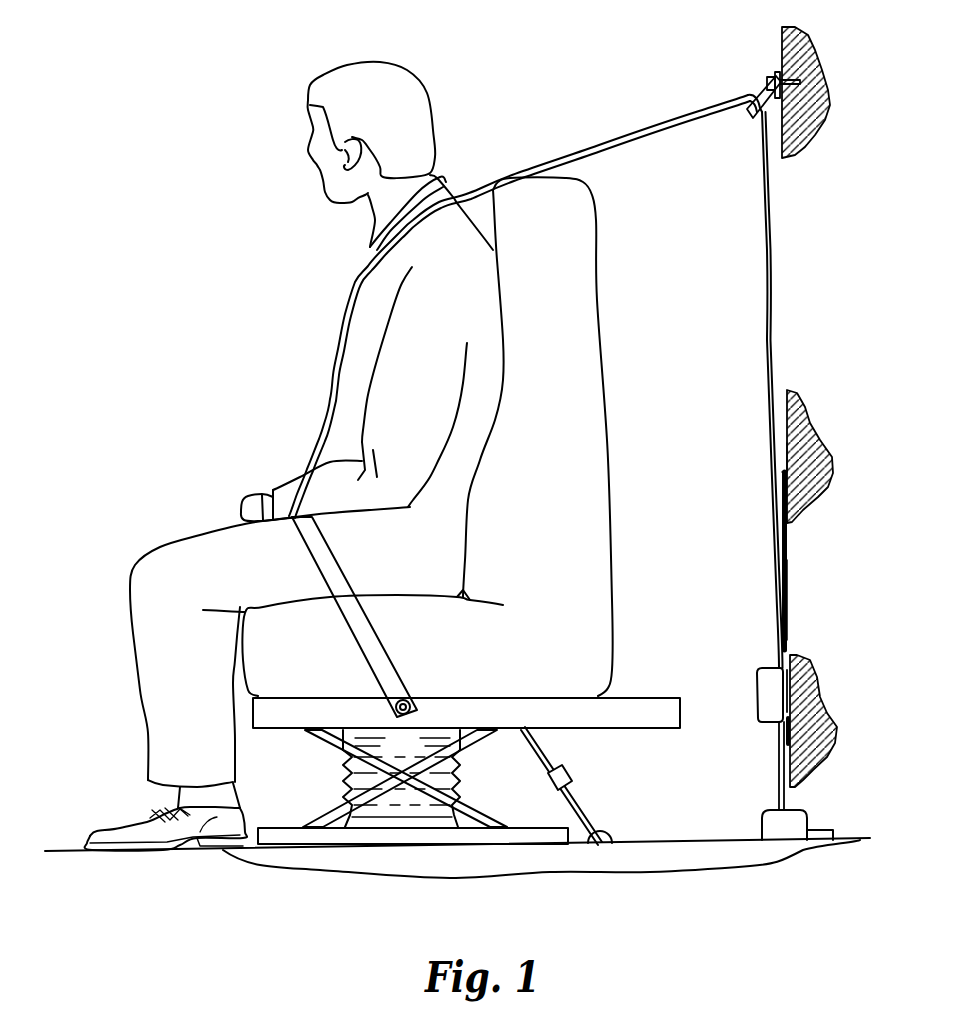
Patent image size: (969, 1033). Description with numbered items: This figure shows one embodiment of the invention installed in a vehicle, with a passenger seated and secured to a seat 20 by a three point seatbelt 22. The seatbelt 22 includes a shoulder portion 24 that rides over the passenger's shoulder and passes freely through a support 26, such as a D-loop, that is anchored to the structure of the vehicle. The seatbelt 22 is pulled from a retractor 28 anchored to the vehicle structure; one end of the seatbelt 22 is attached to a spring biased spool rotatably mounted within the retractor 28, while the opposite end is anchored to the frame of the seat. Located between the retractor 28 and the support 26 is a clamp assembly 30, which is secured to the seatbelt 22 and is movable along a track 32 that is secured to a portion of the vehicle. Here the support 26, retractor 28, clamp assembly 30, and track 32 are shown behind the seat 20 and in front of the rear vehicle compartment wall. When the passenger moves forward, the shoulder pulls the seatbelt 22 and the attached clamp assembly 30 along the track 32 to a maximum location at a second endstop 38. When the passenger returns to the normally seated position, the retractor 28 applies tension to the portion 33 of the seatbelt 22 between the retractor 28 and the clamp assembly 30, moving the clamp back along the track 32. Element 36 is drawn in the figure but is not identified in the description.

The seat 20 is at (540, 248).
The three point seatbelt 22 is at (303, 440).
The shoulder portion 24 is at (612, 135).
The support 26 is at (767, 72).
The retractor 28 is at (777, 822).
The clamp assembly 30 is at (763, 688).
The track 32 is at (787, 595).
The portion 33 is at (780, 797).
The slider 36 is at (788, 738).
The second endstop 38 is at (782, 468).